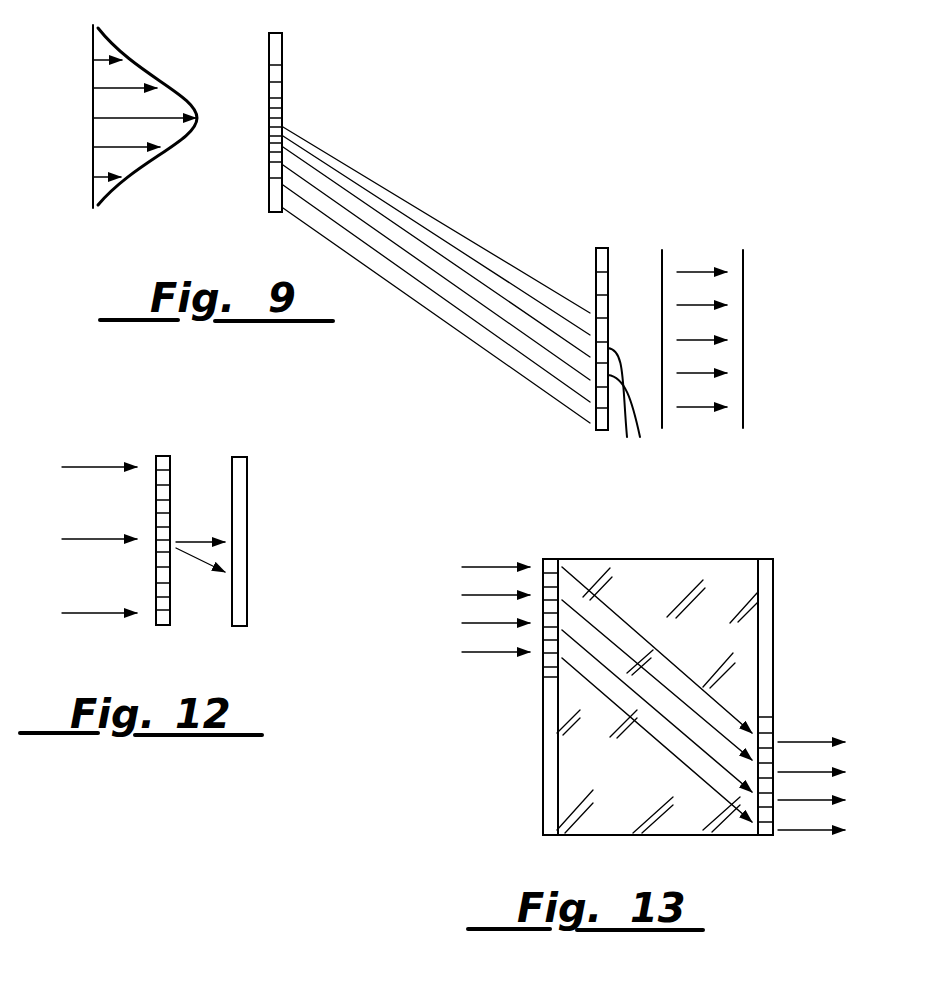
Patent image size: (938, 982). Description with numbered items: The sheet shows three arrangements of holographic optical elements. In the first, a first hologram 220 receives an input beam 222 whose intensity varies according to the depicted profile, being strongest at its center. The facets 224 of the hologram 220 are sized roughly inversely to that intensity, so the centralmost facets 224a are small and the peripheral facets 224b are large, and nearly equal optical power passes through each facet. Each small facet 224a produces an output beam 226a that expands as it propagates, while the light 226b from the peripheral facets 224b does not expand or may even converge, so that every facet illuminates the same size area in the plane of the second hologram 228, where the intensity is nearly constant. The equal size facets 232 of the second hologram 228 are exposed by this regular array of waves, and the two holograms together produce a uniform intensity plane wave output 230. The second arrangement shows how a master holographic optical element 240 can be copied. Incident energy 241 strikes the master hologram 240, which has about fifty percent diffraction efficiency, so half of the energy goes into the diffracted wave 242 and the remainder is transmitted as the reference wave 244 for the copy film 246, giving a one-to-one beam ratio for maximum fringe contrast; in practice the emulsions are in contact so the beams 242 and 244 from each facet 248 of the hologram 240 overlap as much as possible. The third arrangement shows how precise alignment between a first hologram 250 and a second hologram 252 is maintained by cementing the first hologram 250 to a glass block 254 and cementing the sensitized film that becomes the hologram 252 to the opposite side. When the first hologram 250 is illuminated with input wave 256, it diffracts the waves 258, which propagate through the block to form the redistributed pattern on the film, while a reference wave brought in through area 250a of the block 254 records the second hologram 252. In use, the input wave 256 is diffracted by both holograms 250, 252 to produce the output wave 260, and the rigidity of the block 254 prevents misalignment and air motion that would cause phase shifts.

In FIG. 9, the first hologram 220 is at (282, 34).
In FIG. 9, the input beam 222 is at (130, 63).
In FIG. 9, the facets 224 is at (283, 126).
In FIG. 9, the centralmost facets 224a is at (268, 127).
In FIG. 9, the peripheral facets 224b is at (269, 190).
In FIG. 9, the output beam 226a is at (415, 207).
In FIG. 9, the light from peripheral facets 226b is at (462, 336).
In FIG. 9, the second hologram 228 is at (602, 247).
In FIG. 9, the uniform intensity plane wave output 230 is at (692, 270).
In FIG. 9, the facets of second hologram 232 is at (630, 409).
In FIG. 12, the master holographic optical element 240 is at (165, 448).
In FIG. 12, the incident energy 241 is at (87, 468).
In FIG. 12, the diffracted wave 242 is at (197, 558).
In FIG. 12, the reference wave 244 is at (202, 540).
In FIG. 12, the copy film 246 is at (248, 508).
In FIG. 12, the facet 248 is at (173, 478).
In FIG. 13, the first hologram 250 is at (537, 558).
In FIG. 13, the area 250a is at (540, 770).
In FIG. 13, the second hologram 252 is at (783, 730).
In FIG. 13, the glass block 254 is at (668, 558).
In FIG. 13, the input wave 256 is at (483, 653).
In FIG. 13, the diffracted waves 258 is at (690, 740).
In FIG. 13, the output wave 260 is at (797, 836).